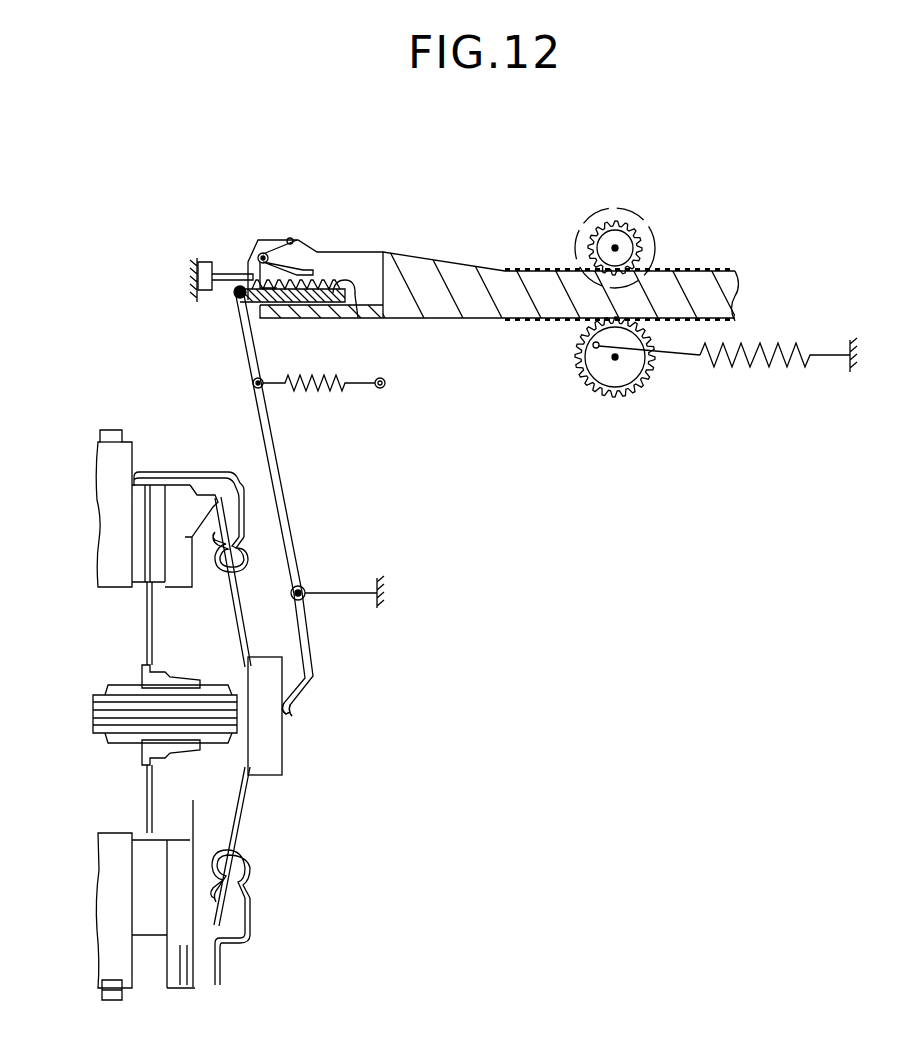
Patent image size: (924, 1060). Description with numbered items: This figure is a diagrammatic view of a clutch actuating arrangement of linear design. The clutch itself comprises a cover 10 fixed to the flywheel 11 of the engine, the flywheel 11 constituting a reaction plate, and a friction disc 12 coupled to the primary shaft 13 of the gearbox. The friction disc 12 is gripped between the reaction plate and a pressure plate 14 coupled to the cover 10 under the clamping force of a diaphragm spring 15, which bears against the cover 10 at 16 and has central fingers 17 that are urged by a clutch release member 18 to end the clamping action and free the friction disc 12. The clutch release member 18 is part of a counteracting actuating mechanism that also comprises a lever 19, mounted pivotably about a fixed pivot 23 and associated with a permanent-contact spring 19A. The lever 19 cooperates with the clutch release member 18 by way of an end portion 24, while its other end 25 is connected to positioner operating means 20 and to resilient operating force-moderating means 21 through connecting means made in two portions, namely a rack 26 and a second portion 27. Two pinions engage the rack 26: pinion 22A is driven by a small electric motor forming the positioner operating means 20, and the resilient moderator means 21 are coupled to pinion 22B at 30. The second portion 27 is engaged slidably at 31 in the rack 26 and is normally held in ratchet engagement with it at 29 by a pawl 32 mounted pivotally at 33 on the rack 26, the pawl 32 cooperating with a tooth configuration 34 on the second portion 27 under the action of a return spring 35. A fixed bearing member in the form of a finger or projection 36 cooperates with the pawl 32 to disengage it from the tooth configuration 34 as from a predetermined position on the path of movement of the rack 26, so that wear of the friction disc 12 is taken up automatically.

The cover 10 is at (210, 472).
The flywheel 11 is at (111, 430).
The friction disc 12 is at (160, 482).
The primary shaft 13 is at (210, 700).
The pressure plate 14 is at (182, 488).
The diaphragm spring 15 is at (240, 480).
The bearing point 16 is at (222, 572).
The fingers 17 is at (246, 625).
The clutch release member 18 is at (268, 660).
The lever 19 is at (283, 482).
The permanent-contact spring 19A is at (335, 390).
The positioner operating means 20 is at (595, 210).
The resilient operating force-moderating means 21 is at (748, 365).
The pinion 22A is at (633, 225).
The pinion 22B is at (628, 395).
The fixed pivot 23 is at (306, 586).
The end portion 24 is at (298, 712).
The other end 25 is at (236, 298).
The rack 26 is at (698, 288).
The second portion of the connecting means 27 is at (320, 305).
The ratchet engagement 29 is at (325, 280).
The coupling point 30 is at (585, 352).
The sliding engagement 31 is at (292, 318).
The pawl 32 is at (288, 238).
The pivot 33 is at (263, 252).
The tooth configuration 34 is at (358, 318).
The return spring 35 is at (297, 246).
The finger or projection 36 is at (227, 270).